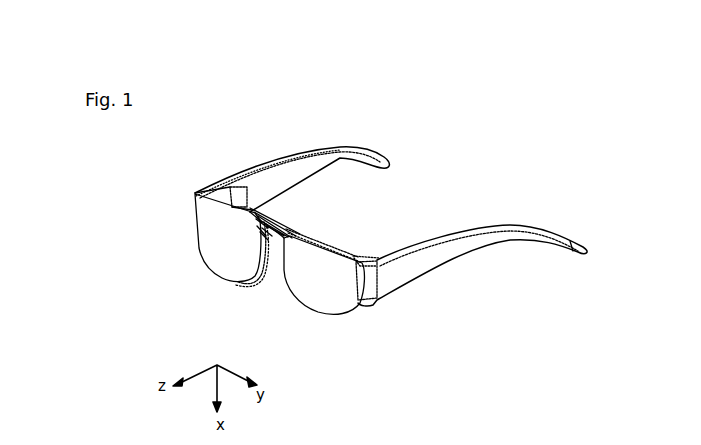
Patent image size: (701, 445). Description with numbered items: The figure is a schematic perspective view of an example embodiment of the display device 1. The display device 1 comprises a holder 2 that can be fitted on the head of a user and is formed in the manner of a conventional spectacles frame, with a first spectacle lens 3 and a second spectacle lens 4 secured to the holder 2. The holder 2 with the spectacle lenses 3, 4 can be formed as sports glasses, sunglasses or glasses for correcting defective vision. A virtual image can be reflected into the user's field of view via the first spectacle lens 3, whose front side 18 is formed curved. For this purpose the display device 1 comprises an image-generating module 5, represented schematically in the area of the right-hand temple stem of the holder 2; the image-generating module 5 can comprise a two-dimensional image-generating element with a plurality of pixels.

The display device 1 is at (375, 222).
The holder 2 is at (309, 151).
The first spectacle lens 3 is at (238, 278).
The second spectacle lens 4 is at (312, 306).
The image-generating module 5 is at (236, 190).
The front side 18 is at (222, 256).